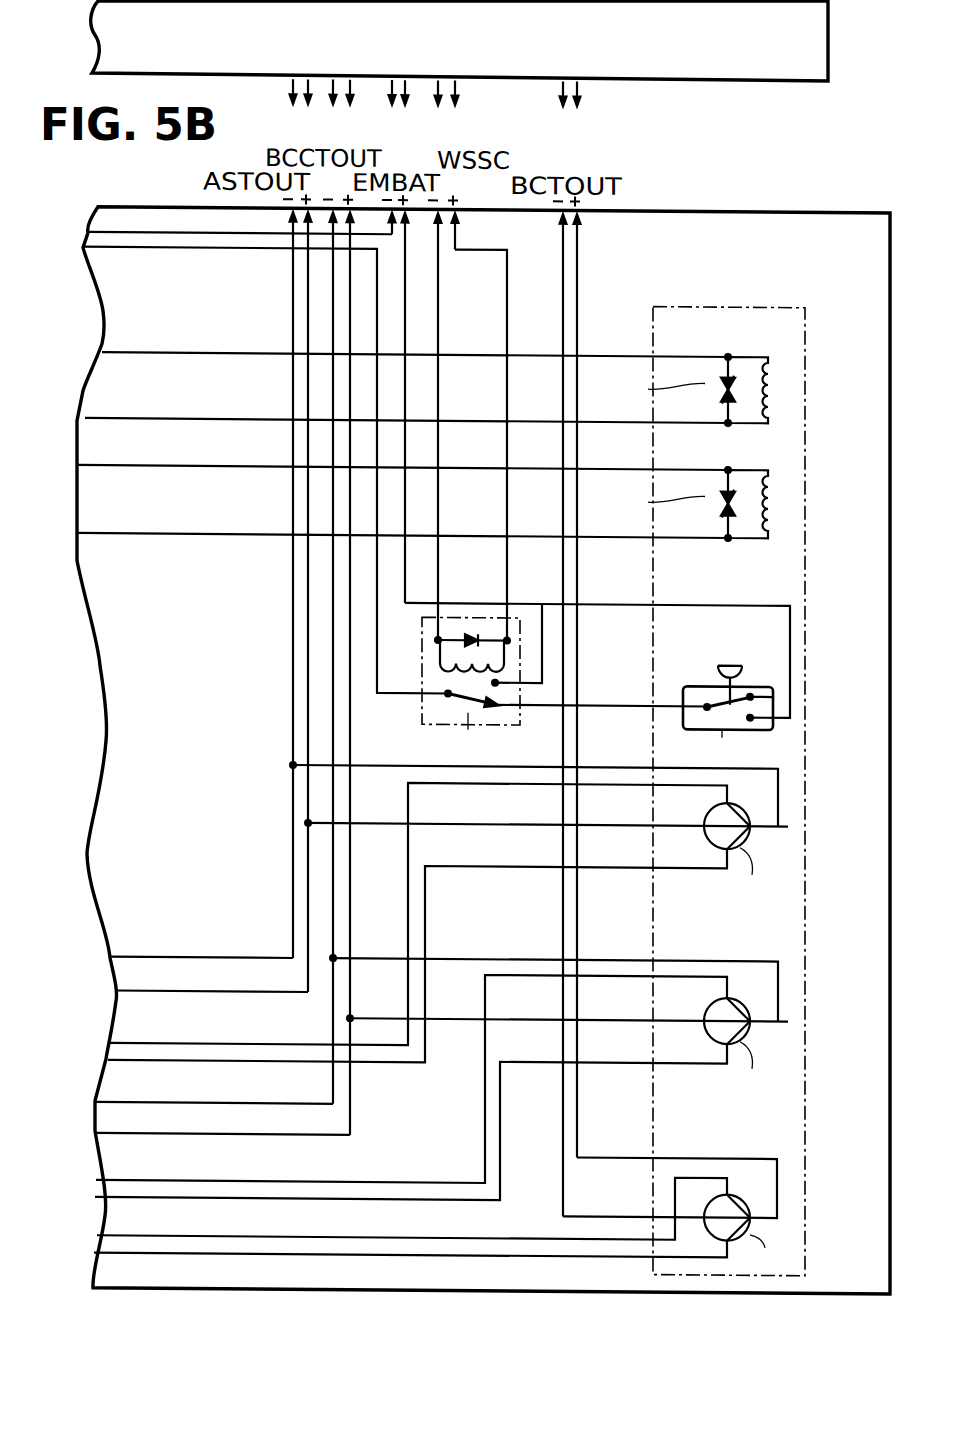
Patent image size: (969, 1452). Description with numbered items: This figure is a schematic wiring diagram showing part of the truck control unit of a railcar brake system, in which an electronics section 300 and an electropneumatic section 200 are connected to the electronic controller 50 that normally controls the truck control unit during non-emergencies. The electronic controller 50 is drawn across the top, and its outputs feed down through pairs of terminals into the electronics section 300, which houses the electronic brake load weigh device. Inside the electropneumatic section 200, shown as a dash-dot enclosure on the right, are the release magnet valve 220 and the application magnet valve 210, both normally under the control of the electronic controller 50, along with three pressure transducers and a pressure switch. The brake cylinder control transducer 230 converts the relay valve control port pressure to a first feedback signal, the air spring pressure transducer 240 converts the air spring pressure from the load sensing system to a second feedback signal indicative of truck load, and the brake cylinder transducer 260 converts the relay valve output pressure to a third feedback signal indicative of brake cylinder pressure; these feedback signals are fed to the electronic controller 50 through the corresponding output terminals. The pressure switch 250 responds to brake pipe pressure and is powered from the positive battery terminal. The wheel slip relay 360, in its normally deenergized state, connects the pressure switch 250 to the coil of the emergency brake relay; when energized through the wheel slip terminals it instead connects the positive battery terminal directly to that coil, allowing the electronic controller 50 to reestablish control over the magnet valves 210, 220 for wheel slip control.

The electronic controller 50 is at (710, 81).
The electronics section 300 is at (790, 206).
The electropneumatic section 200 is at (792, 302).
The release magnet valve 220 is at (752, 346).
The application magnet valve 210 is at (752, 459).
The wheel slip relay 360 is at (468, 611).
The pressure switch 250 is at (697, 681).
The air spring pressure transducer 240 is at (704, 812).
The brake cylinder control transducer 230 is at (704, 1006).
The brake cylinder transducer 260 is at (705, 1200).